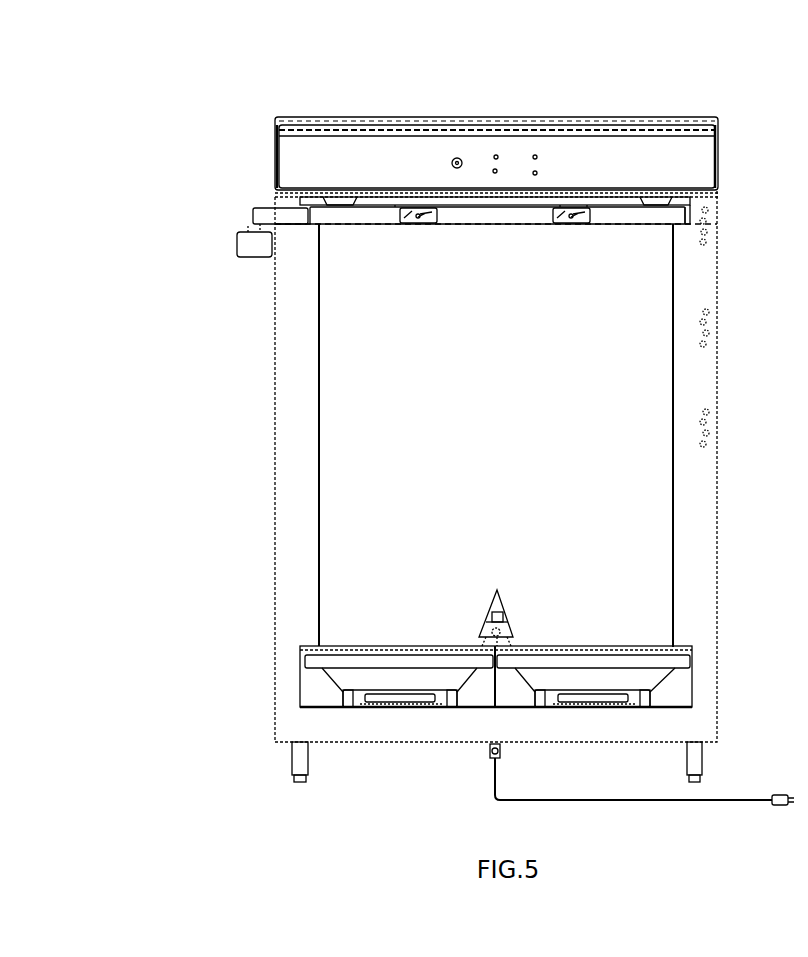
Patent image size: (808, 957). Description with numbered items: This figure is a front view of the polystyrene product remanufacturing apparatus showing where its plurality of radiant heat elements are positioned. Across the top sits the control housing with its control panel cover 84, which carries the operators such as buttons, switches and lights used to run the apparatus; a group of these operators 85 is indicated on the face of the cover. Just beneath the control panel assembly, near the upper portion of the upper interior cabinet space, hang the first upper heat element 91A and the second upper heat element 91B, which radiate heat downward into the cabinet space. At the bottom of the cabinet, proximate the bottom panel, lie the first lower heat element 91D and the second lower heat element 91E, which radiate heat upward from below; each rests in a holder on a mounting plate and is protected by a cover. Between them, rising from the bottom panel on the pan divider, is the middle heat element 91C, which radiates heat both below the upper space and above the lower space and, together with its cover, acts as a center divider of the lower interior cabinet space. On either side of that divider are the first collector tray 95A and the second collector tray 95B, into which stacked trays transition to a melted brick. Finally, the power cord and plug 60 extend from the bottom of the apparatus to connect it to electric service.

The power cord and plug 60 is at (730, 800).
The control panel cover 84 is at (606, 157).
The control elements 85 is at (533, 154).
The first upper heat element 91A is at (418, 226).
The second upper heat element 91B is at (575, 226).
The middle heat element 91C is at (503, 600).
The first lower heat element 91D is at (378, 693).
The second lower heat element 91E is at (615, 690).
The first collector tray 95A is at (317, 658).
The second collector tray 95B is at (695, 650).